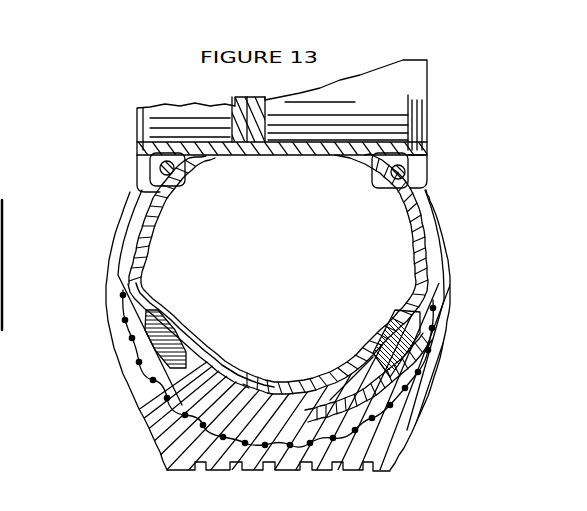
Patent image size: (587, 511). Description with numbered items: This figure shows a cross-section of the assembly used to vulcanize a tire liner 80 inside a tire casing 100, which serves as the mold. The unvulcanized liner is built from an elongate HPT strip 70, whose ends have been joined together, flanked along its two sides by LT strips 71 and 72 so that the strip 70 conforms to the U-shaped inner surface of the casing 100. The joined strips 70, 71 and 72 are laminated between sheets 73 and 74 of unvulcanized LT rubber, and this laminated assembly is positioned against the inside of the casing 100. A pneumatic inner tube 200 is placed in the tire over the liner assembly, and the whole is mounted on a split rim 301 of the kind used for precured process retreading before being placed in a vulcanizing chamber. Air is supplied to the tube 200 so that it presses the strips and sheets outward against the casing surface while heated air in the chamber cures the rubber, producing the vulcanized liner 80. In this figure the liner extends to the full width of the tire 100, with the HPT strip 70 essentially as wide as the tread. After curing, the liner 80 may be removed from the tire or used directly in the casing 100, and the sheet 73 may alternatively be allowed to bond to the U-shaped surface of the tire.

The split rim 301 is at (145, 120).
The tire casing 100 is at (157, 202).
The pneumatic inner tube 200 is at (397, 213).
The HPT strip 70 is at (397, 410).
The LT strip 71 is at (172, 313).
The LT strip 72 is at (393, 310).
The sheet of unvulcanized LT rubber 73 is at (180, 403).
The sheet of unvulcanized LT rubber 74 is at (246, 387).
The liner 80 is at (222, 346).